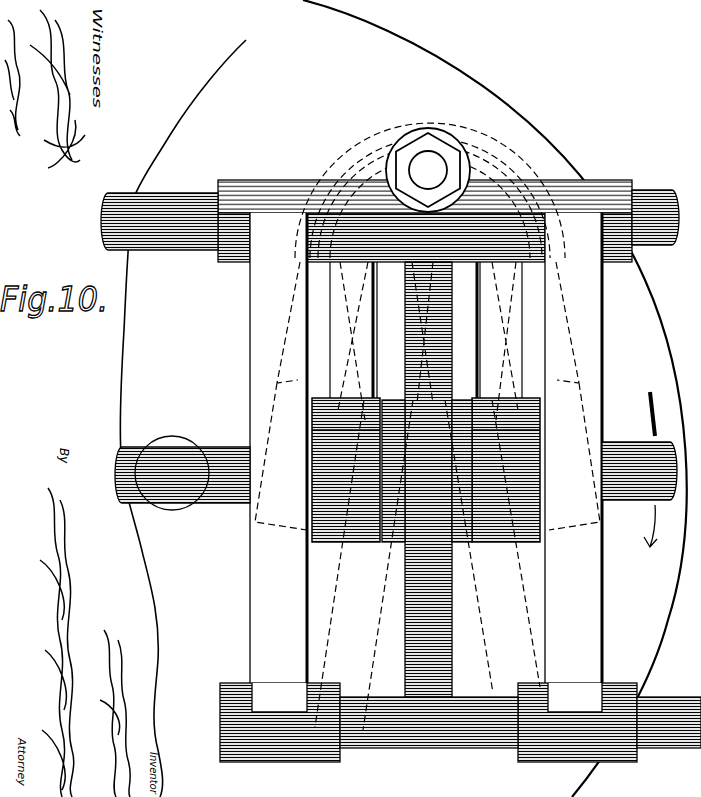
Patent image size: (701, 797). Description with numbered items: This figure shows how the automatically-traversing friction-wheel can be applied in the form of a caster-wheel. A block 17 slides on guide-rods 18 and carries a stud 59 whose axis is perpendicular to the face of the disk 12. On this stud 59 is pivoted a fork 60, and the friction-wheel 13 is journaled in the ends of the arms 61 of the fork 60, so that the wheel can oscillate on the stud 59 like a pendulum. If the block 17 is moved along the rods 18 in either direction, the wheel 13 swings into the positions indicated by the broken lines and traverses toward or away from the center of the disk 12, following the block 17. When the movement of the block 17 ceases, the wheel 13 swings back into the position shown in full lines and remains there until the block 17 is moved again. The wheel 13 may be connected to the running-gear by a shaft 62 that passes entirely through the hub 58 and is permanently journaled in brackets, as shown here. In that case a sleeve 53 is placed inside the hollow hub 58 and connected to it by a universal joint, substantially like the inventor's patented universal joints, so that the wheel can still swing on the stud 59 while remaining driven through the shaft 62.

The disk 12 is at (396, 451).
The friction-wheel 13 is at (460, 670).
The block 17 is at (296, 186).
The guide-rods 18 is at (172, 196).
The sleeve 53 is at (312, 456).
The hub 58 is at (456, 404).
The stud 59 is at (436, 164).
The fork 60 is at (426, 306).
The arms 61 is at (368, 548).
The shaft 62 is at (138, 452).